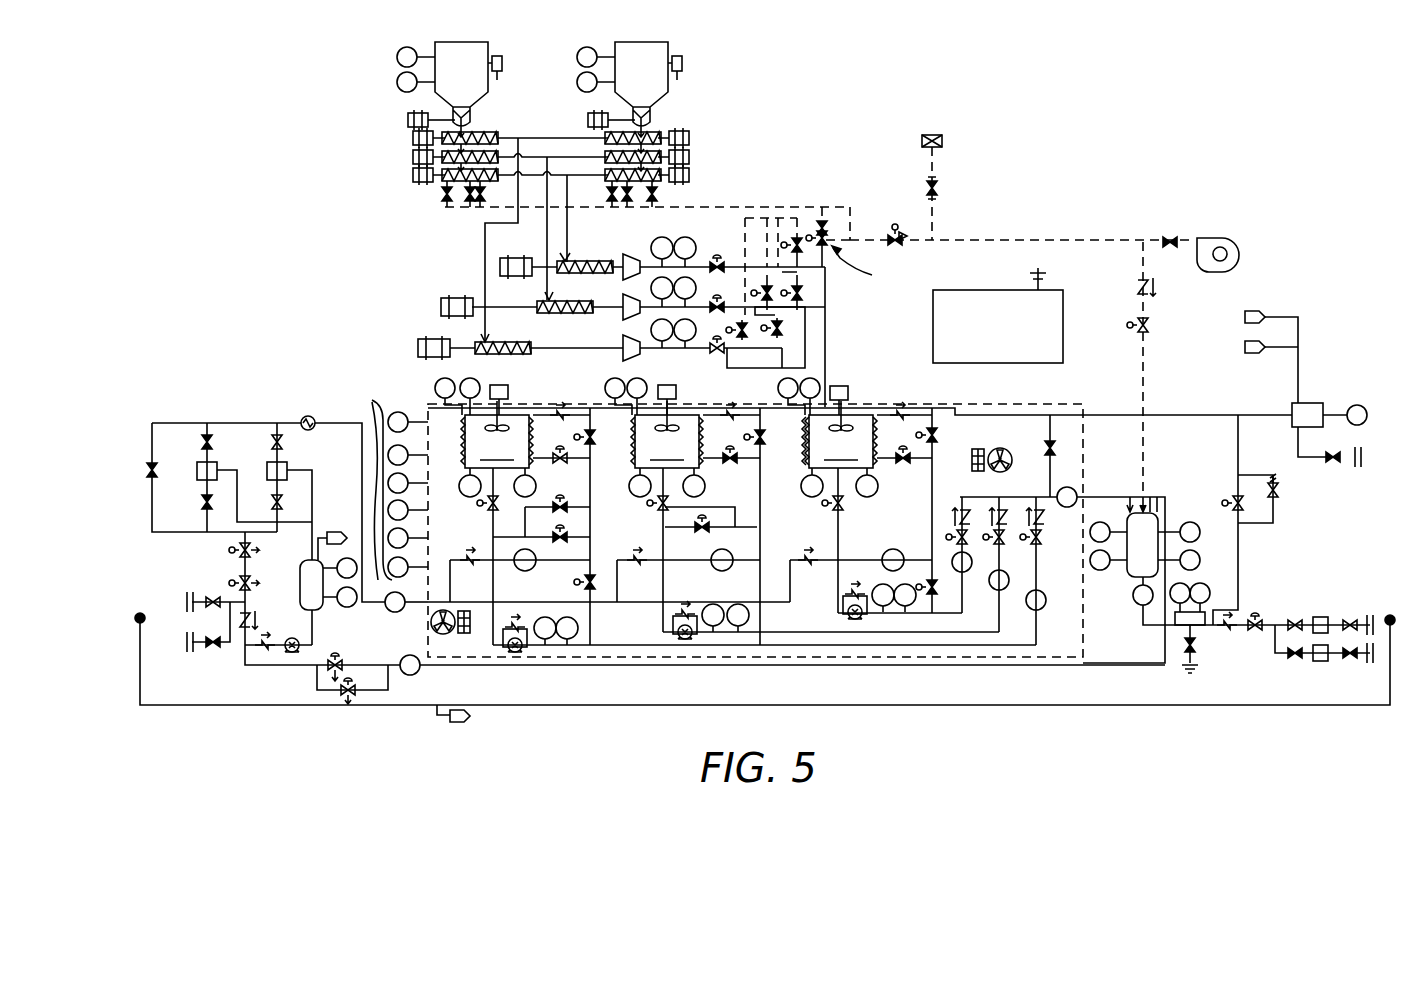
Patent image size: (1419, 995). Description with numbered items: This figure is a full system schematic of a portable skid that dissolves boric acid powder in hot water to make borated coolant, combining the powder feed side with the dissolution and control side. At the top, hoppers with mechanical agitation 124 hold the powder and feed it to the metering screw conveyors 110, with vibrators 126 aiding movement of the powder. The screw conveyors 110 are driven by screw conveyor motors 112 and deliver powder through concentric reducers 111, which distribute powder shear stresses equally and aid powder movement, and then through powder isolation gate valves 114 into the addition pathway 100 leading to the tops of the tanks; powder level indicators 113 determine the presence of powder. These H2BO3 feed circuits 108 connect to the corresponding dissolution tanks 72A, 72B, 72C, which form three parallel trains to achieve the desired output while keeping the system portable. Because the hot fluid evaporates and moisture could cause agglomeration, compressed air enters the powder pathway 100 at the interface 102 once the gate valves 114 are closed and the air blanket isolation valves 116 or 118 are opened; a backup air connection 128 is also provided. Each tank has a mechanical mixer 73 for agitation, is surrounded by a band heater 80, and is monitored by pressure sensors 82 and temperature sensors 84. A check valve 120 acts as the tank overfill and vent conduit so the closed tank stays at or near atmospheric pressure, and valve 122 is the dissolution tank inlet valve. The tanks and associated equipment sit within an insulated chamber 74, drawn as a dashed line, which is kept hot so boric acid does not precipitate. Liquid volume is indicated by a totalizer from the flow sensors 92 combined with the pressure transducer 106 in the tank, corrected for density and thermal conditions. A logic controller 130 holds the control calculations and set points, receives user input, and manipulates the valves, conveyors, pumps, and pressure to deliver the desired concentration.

The hoppers with mechanical agitation 124 is at (483, 50).
The vibrators 126 is at (506, 68).
The screw conveyor motors 112 is at (500, 268).
The metering screw conveyors 110 is at (566, 254).
The concentric reducers 111 is at (624, 260).
The powder level indicators 113 is at (672, 235).
The powder isolation gate valves 114 is at (722, 300).
The air blanket isolation valve 116 is at (803, 230).
The air blanket isolation valve 118 is at (828, 230).
The interface 102 is at (826, 223).
The H2BO3 feed circuits 108 is at (871, 266).
The addition pathway 100 is at (826, 290).
The backup air connection 128 is at (944, 141).
The logic controller 130 is at (1068, 330).
The temperature sensors 84 is at (841, 372).
The mechanical mixer 73 is at (848, 393).
The dissolution tank 72A is at (497, 434).
The dissolution tank 72B is at (667, 434).
The dissolution tank 72C is at (841, 434).
The heater 80 is at (806, 442).
The pressure transducer 106 is at (803, 488).
The pressure sensors 82 is at (350, 555).
The flow sensors 92 is at (405, 612).
The check valve 120 is at (553, 420).
The dissolution tank inlet valve 122 is at (558, 466).
The insulated chamber 74 is at (1020, 404).